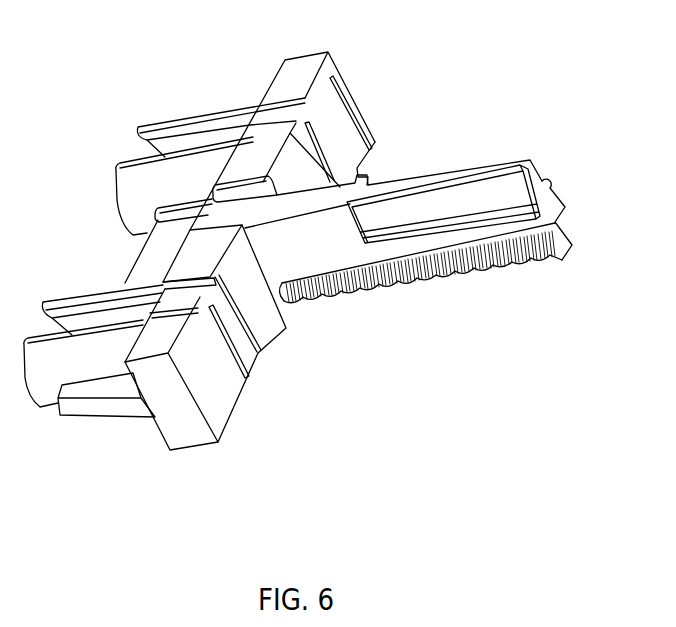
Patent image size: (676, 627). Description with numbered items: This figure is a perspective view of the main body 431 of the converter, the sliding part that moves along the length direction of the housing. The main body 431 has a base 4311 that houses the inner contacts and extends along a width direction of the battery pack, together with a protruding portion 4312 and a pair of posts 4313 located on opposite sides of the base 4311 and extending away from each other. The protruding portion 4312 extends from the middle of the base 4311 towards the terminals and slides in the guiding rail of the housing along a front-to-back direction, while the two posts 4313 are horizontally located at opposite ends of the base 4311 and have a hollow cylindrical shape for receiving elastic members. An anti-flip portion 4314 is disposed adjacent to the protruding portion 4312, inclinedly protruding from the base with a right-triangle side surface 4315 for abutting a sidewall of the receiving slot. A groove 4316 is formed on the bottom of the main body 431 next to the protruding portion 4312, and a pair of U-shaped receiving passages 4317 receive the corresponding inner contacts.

The main body 431 is at (197, 78).
The base 4311 is at (182, 416).
The protruding portion 4312 is at (463, 177).
The posts 4313 is at (52, 390).
The anti-flip portion 4314 is at (280, 305).
The right-triangle side surface 4315 is at (250, 297).
The groove 4316 is at (285, 301).
The U-shaped receiving passages 4317 is at (230, 419).